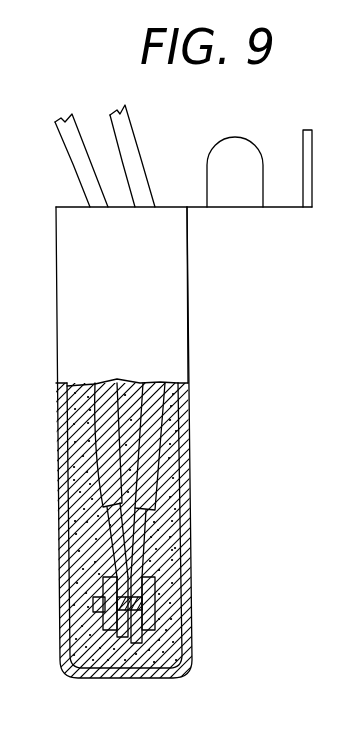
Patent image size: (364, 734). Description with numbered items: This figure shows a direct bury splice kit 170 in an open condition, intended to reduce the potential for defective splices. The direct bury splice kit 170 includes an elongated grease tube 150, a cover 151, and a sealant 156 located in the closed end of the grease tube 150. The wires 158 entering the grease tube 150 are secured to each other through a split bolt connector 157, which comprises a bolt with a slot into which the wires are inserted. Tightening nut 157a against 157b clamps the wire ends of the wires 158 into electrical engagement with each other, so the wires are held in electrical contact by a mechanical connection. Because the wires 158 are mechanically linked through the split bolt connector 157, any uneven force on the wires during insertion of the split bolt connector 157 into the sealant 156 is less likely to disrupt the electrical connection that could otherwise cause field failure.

The grease tube 150 is at (190, 417).
The cover 151 is at (288, 207).
The sealant 156 is at (168, 620).
The split bolt connector 157 is at (148, 602).
The tightening nut 157a is at (110, 632).
The split bolt connector part 157b is at (147, 632).
The wires 158 is at (103, 457).
The direct bury splice kit 170 is at (190, 333).